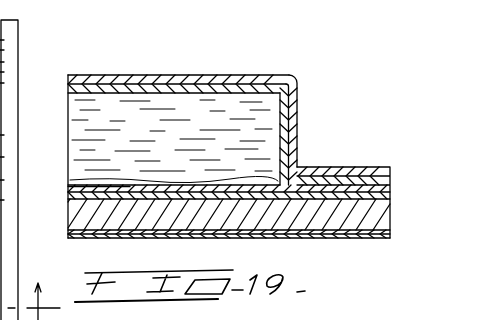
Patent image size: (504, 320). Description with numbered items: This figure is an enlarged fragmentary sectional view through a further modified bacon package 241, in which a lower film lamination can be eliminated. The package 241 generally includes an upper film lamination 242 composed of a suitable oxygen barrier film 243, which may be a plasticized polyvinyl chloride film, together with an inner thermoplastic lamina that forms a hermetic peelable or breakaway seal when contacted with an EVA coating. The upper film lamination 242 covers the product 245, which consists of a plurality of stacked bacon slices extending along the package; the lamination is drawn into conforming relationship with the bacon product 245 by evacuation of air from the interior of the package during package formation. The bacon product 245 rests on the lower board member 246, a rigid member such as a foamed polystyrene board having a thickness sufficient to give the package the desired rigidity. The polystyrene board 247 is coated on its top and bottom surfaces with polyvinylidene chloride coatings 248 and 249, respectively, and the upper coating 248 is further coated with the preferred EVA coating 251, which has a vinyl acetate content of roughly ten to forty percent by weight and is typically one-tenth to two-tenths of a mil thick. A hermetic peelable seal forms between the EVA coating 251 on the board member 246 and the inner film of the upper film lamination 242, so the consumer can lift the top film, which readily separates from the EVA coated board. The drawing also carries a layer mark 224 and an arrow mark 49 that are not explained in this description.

The adjacent panel frame 241 is at (27, 52).
The top facing layer 224 is at (128, 88).
The outer skin 243 is at (236, 75).
The side wall 245 is at (272, 145).
The edge layer 242 is at (393, 179).
The intermediate layer 248 is at (72, 199).
The bonding film 251 is at (67, 192).
The core layer 249 is at (346, 238).
The base laminate 246 is at (393, 185).
The edge of laminate 247 is at (67, 213).
The dimension arrow 49 is at (38, 301).